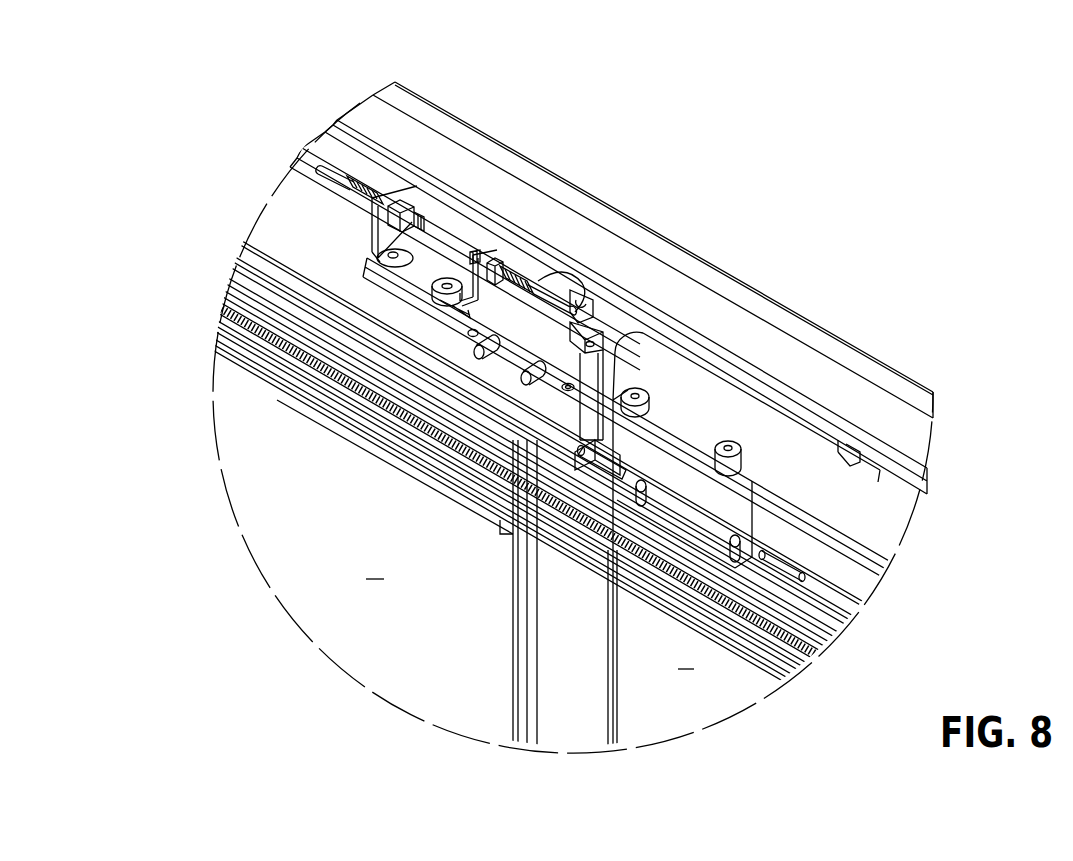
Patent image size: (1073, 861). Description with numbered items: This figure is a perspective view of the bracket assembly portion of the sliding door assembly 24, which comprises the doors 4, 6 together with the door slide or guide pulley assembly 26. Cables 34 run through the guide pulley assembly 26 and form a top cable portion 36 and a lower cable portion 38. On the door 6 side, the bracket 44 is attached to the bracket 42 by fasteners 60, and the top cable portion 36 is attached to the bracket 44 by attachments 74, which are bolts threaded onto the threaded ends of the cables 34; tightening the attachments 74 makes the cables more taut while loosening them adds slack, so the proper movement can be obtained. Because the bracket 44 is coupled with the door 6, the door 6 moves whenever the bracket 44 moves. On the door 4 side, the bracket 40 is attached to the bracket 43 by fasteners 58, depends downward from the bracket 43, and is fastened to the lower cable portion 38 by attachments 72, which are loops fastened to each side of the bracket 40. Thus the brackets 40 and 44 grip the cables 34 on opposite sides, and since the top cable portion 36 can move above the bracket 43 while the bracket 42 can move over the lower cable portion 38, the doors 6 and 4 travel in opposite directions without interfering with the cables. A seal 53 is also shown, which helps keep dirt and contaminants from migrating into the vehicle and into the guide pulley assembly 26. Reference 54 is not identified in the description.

The door 4 is at (651, 655).
The door 6 is at (451, 600).
The sliding door assembly 24 is at (214, 579).
The guide pulley assembly 26 is at (598, 250).
The cables 34 is at (268, 250).
The top cable portion 36 is at (860, 462).
The lower cable portion 38 is at (842, 588).
The bracket 40 is at (735, 513).
The bracket 42 is at (448, 235).
The bracket 43 is at (714, 372).
The bracket 44 is at (414, 310).
The seal 53 is at (836, 660).
The track 54 is at (292, 206).
The fasteners 58 is at (640, 398).
The fasteners 60 is at (380, 257).
The attachments 72 is at (636, 471).
The attachments 74 is at (375, 182).